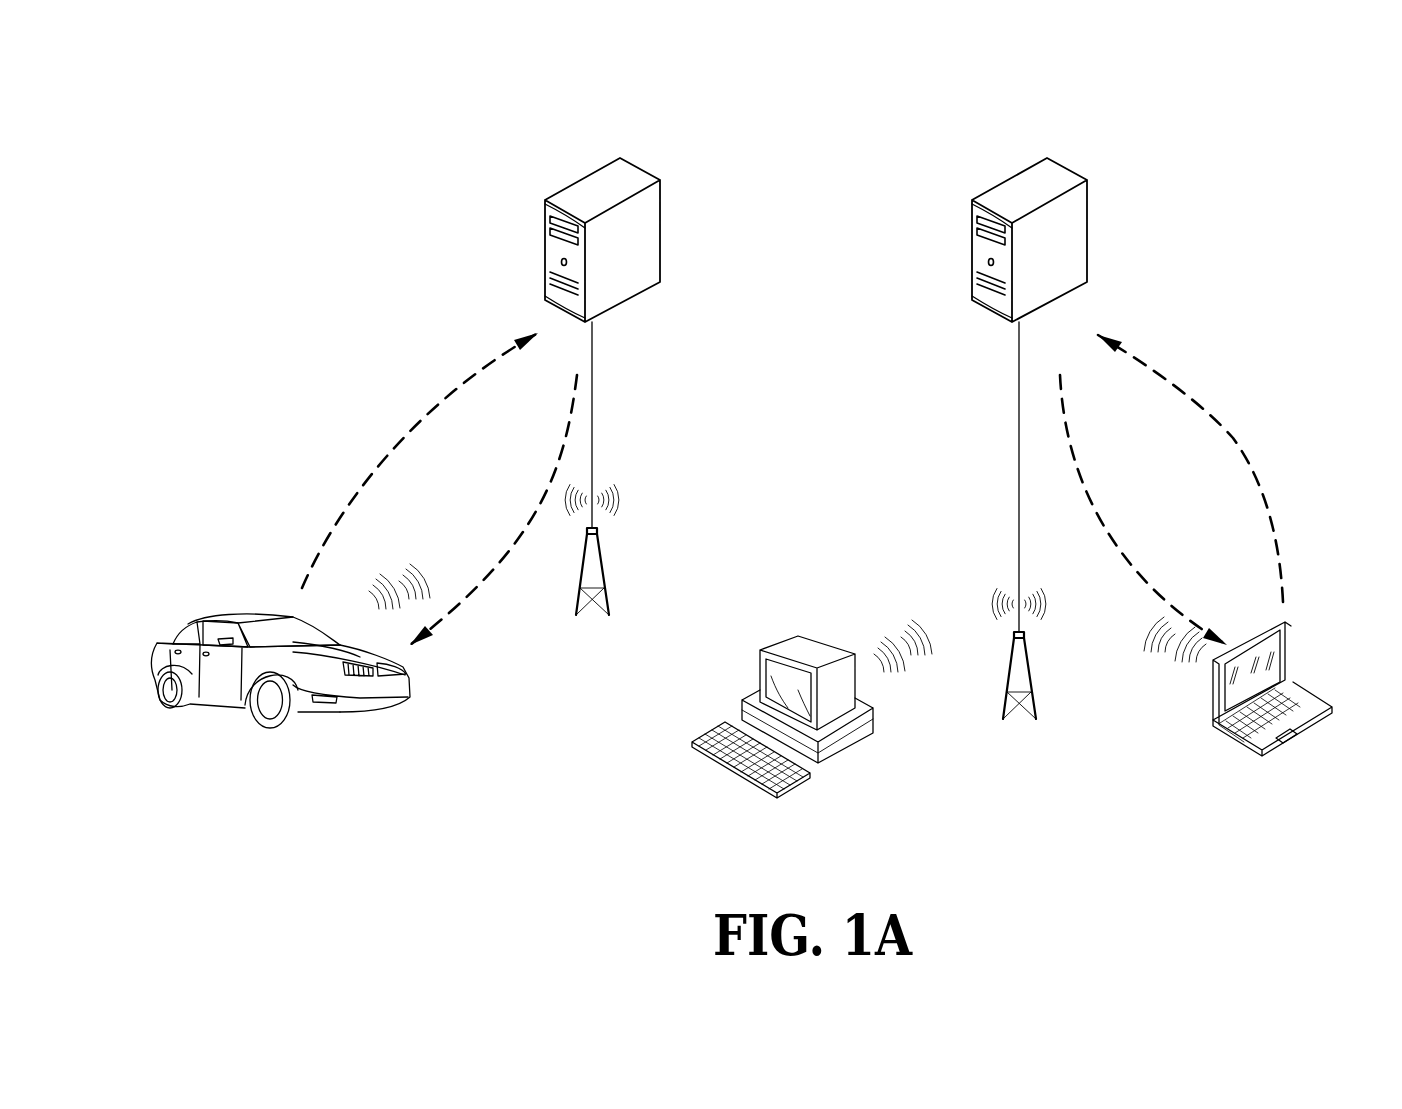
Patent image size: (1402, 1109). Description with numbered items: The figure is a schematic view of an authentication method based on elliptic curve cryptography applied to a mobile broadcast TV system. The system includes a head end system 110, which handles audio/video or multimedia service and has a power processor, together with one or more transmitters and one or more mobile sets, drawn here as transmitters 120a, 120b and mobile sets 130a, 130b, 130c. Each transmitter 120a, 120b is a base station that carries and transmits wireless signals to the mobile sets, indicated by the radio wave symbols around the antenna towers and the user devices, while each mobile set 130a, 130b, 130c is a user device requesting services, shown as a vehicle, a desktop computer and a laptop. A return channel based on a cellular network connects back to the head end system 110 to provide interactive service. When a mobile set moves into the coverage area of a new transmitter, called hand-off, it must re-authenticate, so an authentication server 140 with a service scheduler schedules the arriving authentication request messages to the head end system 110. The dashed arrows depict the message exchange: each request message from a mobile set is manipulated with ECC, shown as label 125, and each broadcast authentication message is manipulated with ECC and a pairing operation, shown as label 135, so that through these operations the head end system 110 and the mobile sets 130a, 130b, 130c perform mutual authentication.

The head end system 110 is at (585, 178).
The authentication server 140 is at (1010, 178).
The transmitter 120a is at (605, 578).
The transmitter 120b is at (1030, 675).
The request message manipulated with ECC 125 is at (1105, 532).
The broadcast authentication message manipulated with ECC and pairing operation 135 is at (1233, 438).
The mobile set 130a is at (245, 612).
The mobile set 130b is at (845, 750).
The mobile set 130c is at (1297, 730).